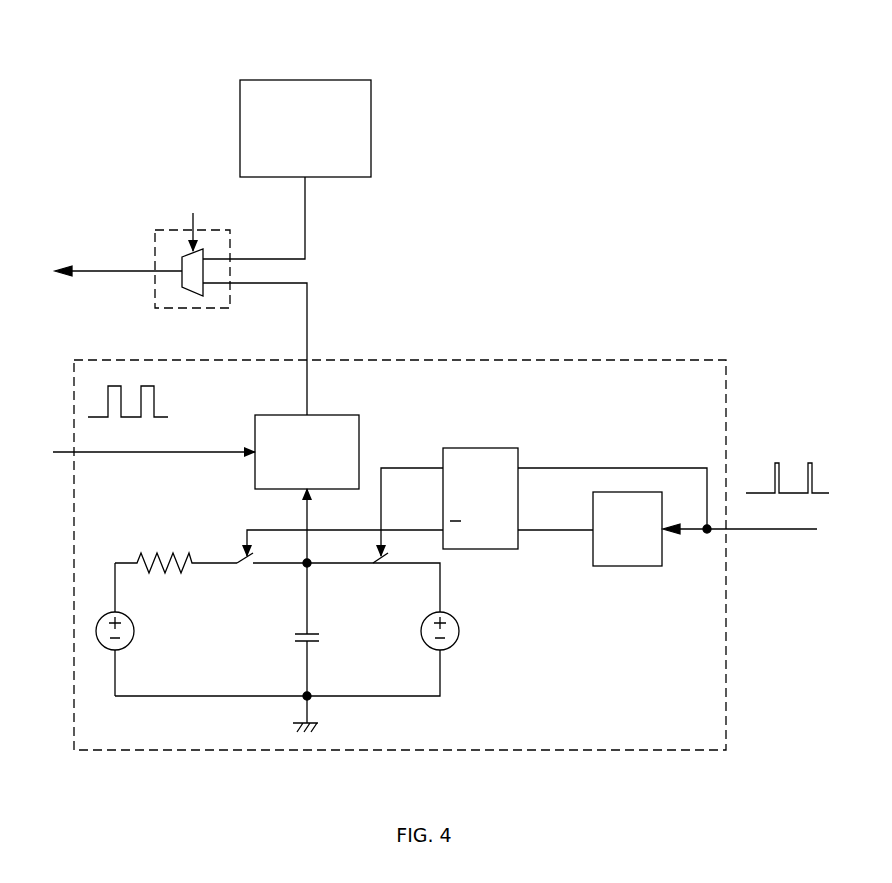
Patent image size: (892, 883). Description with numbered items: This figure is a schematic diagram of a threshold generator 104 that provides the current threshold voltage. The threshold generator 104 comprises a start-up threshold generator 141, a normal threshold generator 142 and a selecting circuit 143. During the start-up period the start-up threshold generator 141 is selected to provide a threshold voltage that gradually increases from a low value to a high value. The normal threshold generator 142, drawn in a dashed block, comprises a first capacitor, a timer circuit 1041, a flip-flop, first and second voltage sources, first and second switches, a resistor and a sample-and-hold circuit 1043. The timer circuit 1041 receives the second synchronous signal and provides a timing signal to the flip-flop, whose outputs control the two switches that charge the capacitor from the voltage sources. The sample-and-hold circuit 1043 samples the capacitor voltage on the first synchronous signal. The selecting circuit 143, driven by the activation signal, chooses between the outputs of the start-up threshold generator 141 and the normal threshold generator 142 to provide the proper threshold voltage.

The threshold generator 104 is at (468, 73).
The start-up threshold generator 141 is at (371, 157).
The normal threshold generator 142 is at (553, 360).
The selecting circuit 143 is at (158, 310).
The timer circuit 1041 is at (625, 567).
The sample-and-hold circuit 1043 is at (259, 490).